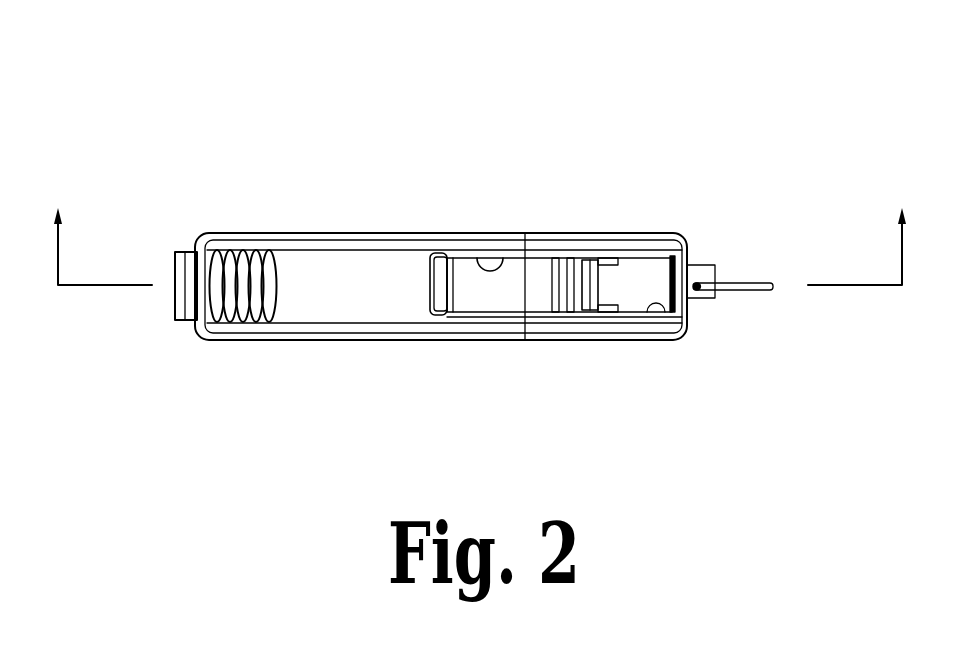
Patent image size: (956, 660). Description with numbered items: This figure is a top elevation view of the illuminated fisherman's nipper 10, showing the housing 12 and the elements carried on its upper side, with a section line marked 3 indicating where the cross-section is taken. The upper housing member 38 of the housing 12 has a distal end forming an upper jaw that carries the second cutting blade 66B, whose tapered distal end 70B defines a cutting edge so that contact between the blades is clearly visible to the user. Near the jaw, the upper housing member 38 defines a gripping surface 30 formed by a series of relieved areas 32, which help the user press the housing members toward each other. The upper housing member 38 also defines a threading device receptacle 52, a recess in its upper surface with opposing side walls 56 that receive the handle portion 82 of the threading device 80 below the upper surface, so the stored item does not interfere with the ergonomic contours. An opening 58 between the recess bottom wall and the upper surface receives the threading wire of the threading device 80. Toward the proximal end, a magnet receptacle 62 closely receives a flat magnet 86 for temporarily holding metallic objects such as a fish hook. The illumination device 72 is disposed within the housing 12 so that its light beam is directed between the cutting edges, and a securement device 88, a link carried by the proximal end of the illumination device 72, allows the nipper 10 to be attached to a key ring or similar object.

The nipper 10 is at (329, 126).
The housing 12 is at (408, 222).
The gripping surface 30 is at (232, 213).
The relieved areas 32 is at (212, 248).
The upper housing member 38 is at (345, 290).
The threading device receptacle 52 is at (475, 315).
The side walls 56 is at (498, 265).
The opening 58 is at (427, 295).
The magnet receptacle 62 is at (668, 333).
The second cutting blade 66B is at (182, 298).
The distal end of second cutting blade 70B is at (178, 318).
The illumination device 72 is at (705, 315).
The threading device 80 is at (492, 275).
The handle portion 82 is at (510, 292).
The magnet 86 is at (627, 283).
The securement device 88 is at (743, 283).
The section line 3- 3 is at (480, 238).